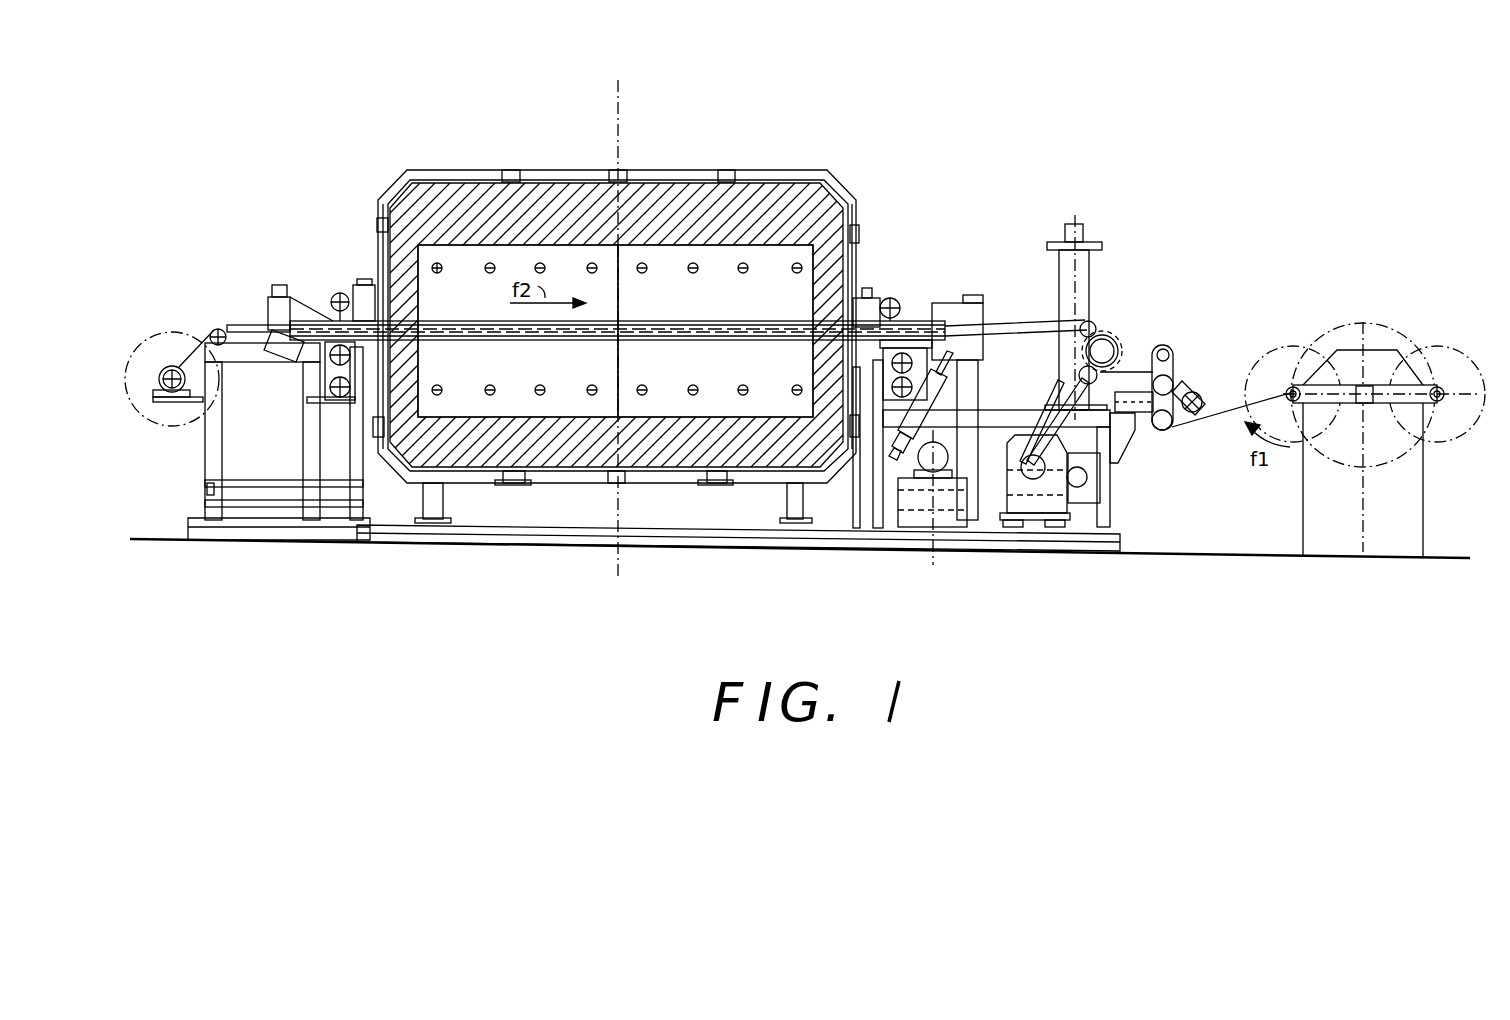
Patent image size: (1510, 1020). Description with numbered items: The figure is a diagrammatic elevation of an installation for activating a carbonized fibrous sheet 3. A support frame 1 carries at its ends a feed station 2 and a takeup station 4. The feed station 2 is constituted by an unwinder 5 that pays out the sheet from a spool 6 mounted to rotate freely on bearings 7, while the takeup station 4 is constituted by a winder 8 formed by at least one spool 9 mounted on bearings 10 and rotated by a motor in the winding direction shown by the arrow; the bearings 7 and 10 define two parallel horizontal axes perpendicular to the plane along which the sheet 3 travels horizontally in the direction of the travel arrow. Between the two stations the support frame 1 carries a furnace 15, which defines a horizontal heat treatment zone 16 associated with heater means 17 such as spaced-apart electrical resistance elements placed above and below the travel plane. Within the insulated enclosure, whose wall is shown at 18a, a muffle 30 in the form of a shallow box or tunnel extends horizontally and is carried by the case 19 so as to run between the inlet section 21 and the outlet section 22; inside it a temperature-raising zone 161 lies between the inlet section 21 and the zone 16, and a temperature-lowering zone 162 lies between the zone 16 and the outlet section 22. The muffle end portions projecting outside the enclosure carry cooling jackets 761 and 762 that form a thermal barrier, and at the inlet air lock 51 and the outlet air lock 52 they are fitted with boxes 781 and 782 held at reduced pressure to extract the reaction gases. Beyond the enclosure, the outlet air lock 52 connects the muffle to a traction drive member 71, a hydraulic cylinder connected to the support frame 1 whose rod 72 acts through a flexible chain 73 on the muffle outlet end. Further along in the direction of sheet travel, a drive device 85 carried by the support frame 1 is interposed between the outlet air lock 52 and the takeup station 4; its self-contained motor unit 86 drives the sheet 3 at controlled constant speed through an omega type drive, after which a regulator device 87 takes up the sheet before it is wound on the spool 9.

The support frame 1 is at (550, 538).
The feed station 2 is at (172, 318).
The fibrous sheet 3 is at (242, 328).
The takeup station 4 is at (1396, 315).
The unwinder 5 is at (217, 440).
The spool 6 is at (163, 423).
The bearings 7 is at (186, 384).
The winder 8 is at (1337, 367).
The spool 9 is at (1322, 420).
The bearings 10 is at (1300, 378).
The furnace 15 is at (670, 150).
The heat treatment zone 16 is at (615, 331).
The heater means 17 is at (440, 273).
The insulating wall 18a is at (778, 213).
The case 19 is at (508, 170).
The inlet section 21 is at (380, 250).
The outlet section 22 is at (867, 255).
The muffle 30 is at (633, 318).
The air lock 51 is at (335, 302).
The outlet air lock 52 is at (930, 312).
The traction drive member 71 is at (932, 527).
The rod 72 is at (947, 380).
The chain 73 is at (953, 357).
The drive device 85 is at (1124, 325).
The motor unit 86 is at (1093, 480).
The regulator device 87 is at (1192, 352).
The temperature-raising zone 161 is at (418, 372).
The temperature-lowering zone 162 is at (813, 366).
The jacket 761 is at (363, 287).
The jacket 762 is at (878, 297).
The box 781 is at (277, 295).
The box 782 is at (977, 297).